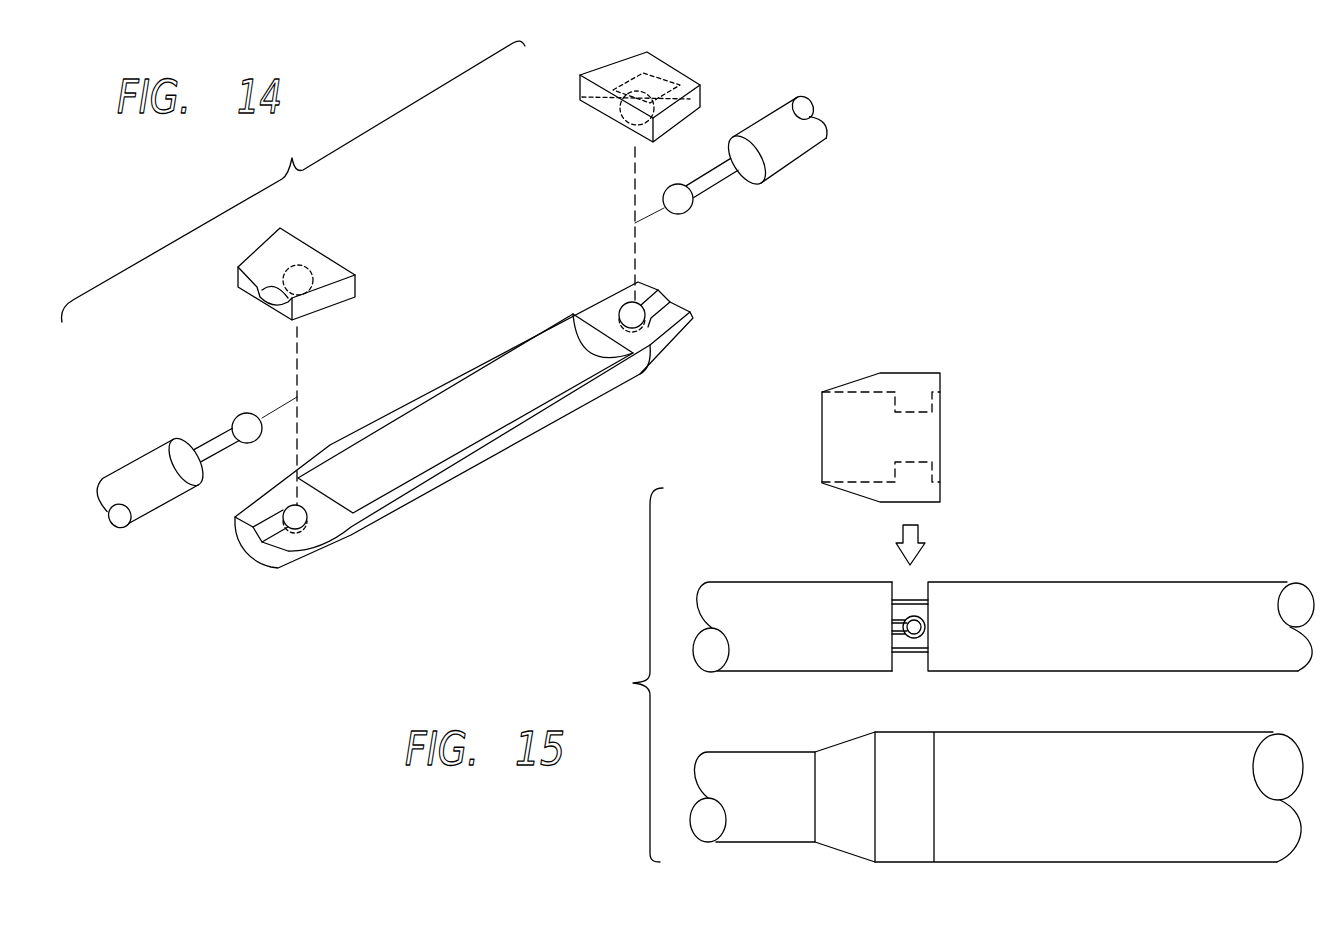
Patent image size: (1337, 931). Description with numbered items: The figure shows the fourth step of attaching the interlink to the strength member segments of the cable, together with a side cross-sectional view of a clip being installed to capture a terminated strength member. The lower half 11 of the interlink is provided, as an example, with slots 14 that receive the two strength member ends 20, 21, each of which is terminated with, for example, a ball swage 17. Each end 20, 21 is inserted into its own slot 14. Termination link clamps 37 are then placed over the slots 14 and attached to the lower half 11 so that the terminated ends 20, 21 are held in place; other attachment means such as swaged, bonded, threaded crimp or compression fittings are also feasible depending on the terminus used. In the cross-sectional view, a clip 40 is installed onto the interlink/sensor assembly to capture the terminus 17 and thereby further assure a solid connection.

In FIG. 14, the lower half 11 is at (404, 545).
In FIG. 14, the slots 14 is at (305, 509).
In FIG. 14, the ball swage 17 is at (247, 413).
In FIG. 14, the end 20 is at (212, 445).
In FIG. 14, the end 21 is at (709, 183).
In FIG. 14, the termination link clamps 37 is at (583, 114).
In FIG. 15, the clip 40 is at (958, 382).